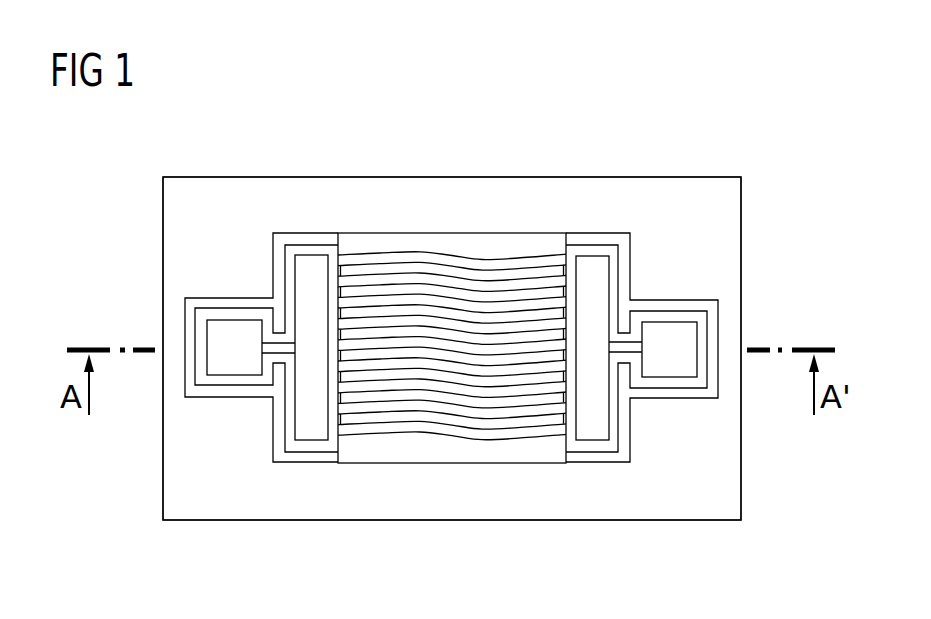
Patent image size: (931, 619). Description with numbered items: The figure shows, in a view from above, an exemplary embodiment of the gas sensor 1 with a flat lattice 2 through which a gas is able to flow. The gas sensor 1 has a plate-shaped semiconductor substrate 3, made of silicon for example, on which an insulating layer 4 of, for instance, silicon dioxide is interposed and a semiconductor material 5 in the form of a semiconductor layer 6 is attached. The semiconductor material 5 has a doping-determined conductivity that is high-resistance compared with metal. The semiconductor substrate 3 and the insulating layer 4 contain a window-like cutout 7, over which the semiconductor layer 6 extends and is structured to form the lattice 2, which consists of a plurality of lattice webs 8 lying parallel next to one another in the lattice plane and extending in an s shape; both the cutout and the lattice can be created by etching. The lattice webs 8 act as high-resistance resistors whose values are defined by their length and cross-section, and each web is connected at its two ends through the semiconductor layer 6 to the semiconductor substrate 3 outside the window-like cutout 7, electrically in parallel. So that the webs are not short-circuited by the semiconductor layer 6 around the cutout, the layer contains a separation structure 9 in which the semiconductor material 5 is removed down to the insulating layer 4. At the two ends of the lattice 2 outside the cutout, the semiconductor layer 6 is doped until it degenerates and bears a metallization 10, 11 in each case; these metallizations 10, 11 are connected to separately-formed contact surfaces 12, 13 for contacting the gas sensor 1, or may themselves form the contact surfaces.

The gas sensor 1 is at (734, 140).
The lattice 2 is at (452, 348).
The semiconductor substrate 3 is at (557, 520).
The insulating layer 4 is at (308, 455).
The semiconductor material 5 is at (642, 412).
The semiconductor layer 6 is at (672, 378).
The window-like cutout 7 is at (403, 466).
The lattice webs 8 is at (452, 348).
The separation structure 9 is at (265, 401).
The metallization 10 is at (307, 255).
The metallization 11 is at (591, 256).
The contact surface 12 is at (232, 320).
The contact surface 13 is at (672, 322).